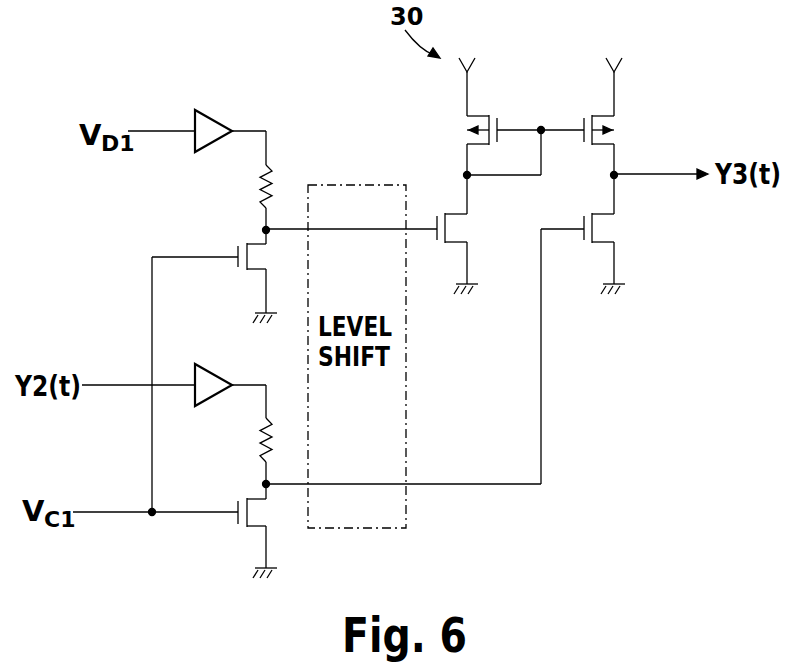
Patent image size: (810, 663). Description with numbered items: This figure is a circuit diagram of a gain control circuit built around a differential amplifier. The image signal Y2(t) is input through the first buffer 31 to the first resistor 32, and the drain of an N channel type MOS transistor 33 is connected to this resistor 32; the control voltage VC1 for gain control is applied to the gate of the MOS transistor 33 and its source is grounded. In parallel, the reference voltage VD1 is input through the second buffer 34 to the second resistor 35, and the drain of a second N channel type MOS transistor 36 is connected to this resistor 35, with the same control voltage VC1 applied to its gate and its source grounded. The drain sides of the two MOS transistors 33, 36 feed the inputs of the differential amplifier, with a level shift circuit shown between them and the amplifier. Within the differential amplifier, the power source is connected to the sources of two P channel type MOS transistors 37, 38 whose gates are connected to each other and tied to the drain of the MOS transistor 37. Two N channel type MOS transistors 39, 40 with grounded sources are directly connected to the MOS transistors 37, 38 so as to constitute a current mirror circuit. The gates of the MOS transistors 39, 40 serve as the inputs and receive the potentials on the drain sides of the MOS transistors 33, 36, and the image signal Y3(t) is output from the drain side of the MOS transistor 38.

The first buffer 31 is at (205, 360).
The first resistor 32 is at (258, 440).
The N channel type MOS transistor 33 is at (248, 493).
The second buffer 34 is at (205, 111).
The second resistor 35 is at (258, 190).
The N channel type MOS transistor 36 is at (250, 233).
The P channel type MOS transistor 37 is at (482, 108).
The P channel type MOS transistor 38 is at (600, 108).
The N channel type MOS transistor 39 is at (452, 202).
The N channel type MOS transistor 40 is at (627, 223).